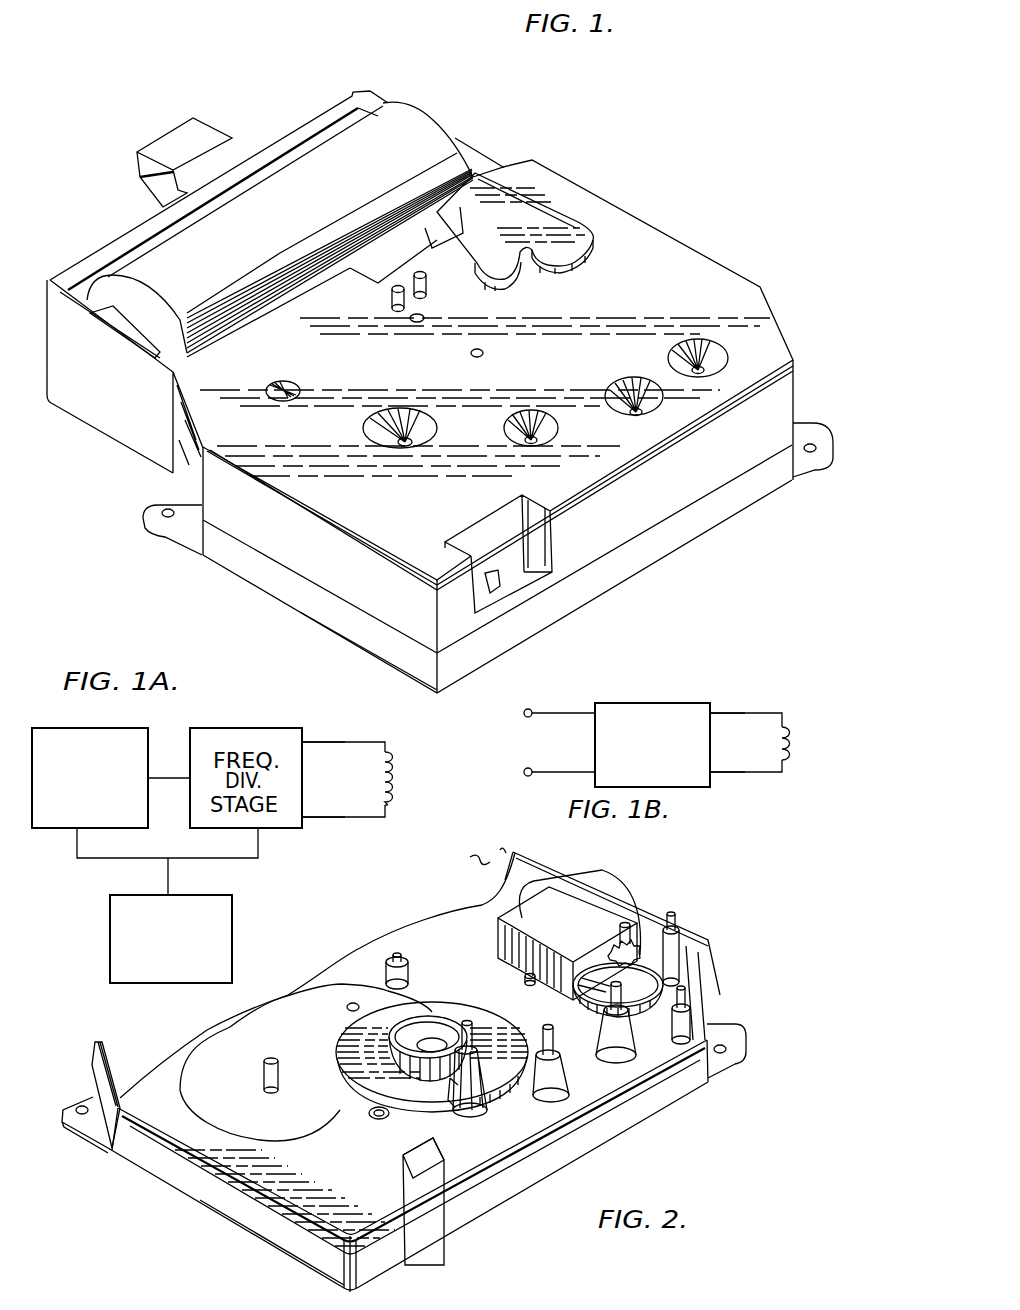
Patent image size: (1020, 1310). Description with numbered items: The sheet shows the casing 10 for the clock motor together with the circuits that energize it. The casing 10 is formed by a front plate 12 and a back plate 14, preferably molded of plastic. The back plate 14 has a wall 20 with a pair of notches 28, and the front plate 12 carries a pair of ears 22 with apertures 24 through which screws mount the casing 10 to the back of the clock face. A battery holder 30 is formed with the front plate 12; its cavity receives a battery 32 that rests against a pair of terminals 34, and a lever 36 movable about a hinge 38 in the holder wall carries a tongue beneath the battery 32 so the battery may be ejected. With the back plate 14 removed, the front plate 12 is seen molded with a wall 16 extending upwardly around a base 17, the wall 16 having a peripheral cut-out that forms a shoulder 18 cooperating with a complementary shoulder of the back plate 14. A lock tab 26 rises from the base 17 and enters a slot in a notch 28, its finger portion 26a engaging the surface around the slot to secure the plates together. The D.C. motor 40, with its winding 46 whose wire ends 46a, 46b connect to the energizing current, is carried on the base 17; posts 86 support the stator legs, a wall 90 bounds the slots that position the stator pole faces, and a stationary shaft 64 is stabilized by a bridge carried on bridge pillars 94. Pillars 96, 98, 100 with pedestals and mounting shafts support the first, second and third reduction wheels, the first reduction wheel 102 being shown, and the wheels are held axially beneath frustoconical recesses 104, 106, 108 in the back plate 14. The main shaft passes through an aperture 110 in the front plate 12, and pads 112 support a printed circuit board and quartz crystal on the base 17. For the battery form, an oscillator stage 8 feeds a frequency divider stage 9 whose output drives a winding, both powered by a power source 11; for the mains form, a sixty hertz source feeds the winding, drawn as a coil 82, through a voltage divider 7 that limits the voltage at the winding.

In FIG. 1B, the voltage divider 7 is at (657, 707).
In FIG. 1A, the oscillator stage 8 is at (42, 733).
In FIG. 1A, the frequency divider stage 9 is at (193, 750).
In FIG. 1, the casing 10 is at (627, 188).
In FIG. 1A, the power source 11 is at (232, 907).
In FIG. 1, the front plate 12 is at (507, 660).
In FIG. 2, the front plate 12 is at (508, 1203).
In FIG. 1, the back plate 14 is at (320, 492).
In FIG. 1, the wall 16 is at (387, 643).
In FIG. 2, the wall 16 is at (311, 1254).
In FIG. 2, the base 17 is at (432, 1027).
In FIG. 2, the shoulder 18 is at (185, 1165).
In FIG. 1, the wall 20 is at (330, 577).
In FIG. 1, the ears 22 is at (805, 462).
In FIG. 2, the ears 22 is at (95, 1127).
In FIG. 1, the apertures 24 is at (813, 436).
In FIG. 2, the apertures 24 is at (82, 1108).
In FIG. 2, the lock tabs 26 is at (427, 1220).
In FIG. 1, the finger portion 26a is at (523, 570).
In FIG. 2, the finger portion 26a is at (428, 1153).
In FIG. 1, the notches 28 is at (375, 275).
In FIG. 1, the battery holder 30 is at (107, 393).
In FIG. 1, the battery 32 is at (430, 143).
In FIG. 1, the terminals 34 is at (130, 328).
In FIG. 1, the lever 36 is at (195, 138).
In FIG. 1, the hinge 38 is at (233, 172).
In FIG. 2, the D.C. motor 40 is at (609, 894).
In FIG. 1A, the winding 46 is at (392, 777).
In FIG. 1A, the wire end 46a is at (335, 742).
In FIG. 1B, the wire end 46a is at (736, 706).
In FIG. 1A, the wire end 46b is at (320, 820).
In FIG. 1B, the wire end 46b is at (727, 777).
In FIG. 2, the shaft 64 is at (620, 944).
In FIG. 1B, the coil 82 is at (777, 742).
In FIG. 2, the posts 86 is at (530, 984).
In FIG. 2, the wall 90 is at (645, 1016).
In FIG. 2, the bridge pillars 94 is at (670, 948).
In FIG. 2, the pillar 96 is at (634, 1056).
In FIG. 2, the pillar 98 is at (575, 1092).
In FIG. 2, the pillar 100 is at (453, 1107).
In FIG. 2, the first reduction wheel 102 is at (602, 991).
In FIG. 1, the frustoconical recess 104 is at (700, 375).
In FIG. 1, the frustoconical recess 106 is at (640, 415).
In FIG. 1, the frustoconical recess 108 is at (540, 407).
In FIG. 2, the aperture 110 is at (433, 1043).
In FIG. 2, the pads 112 is at (406, 980).